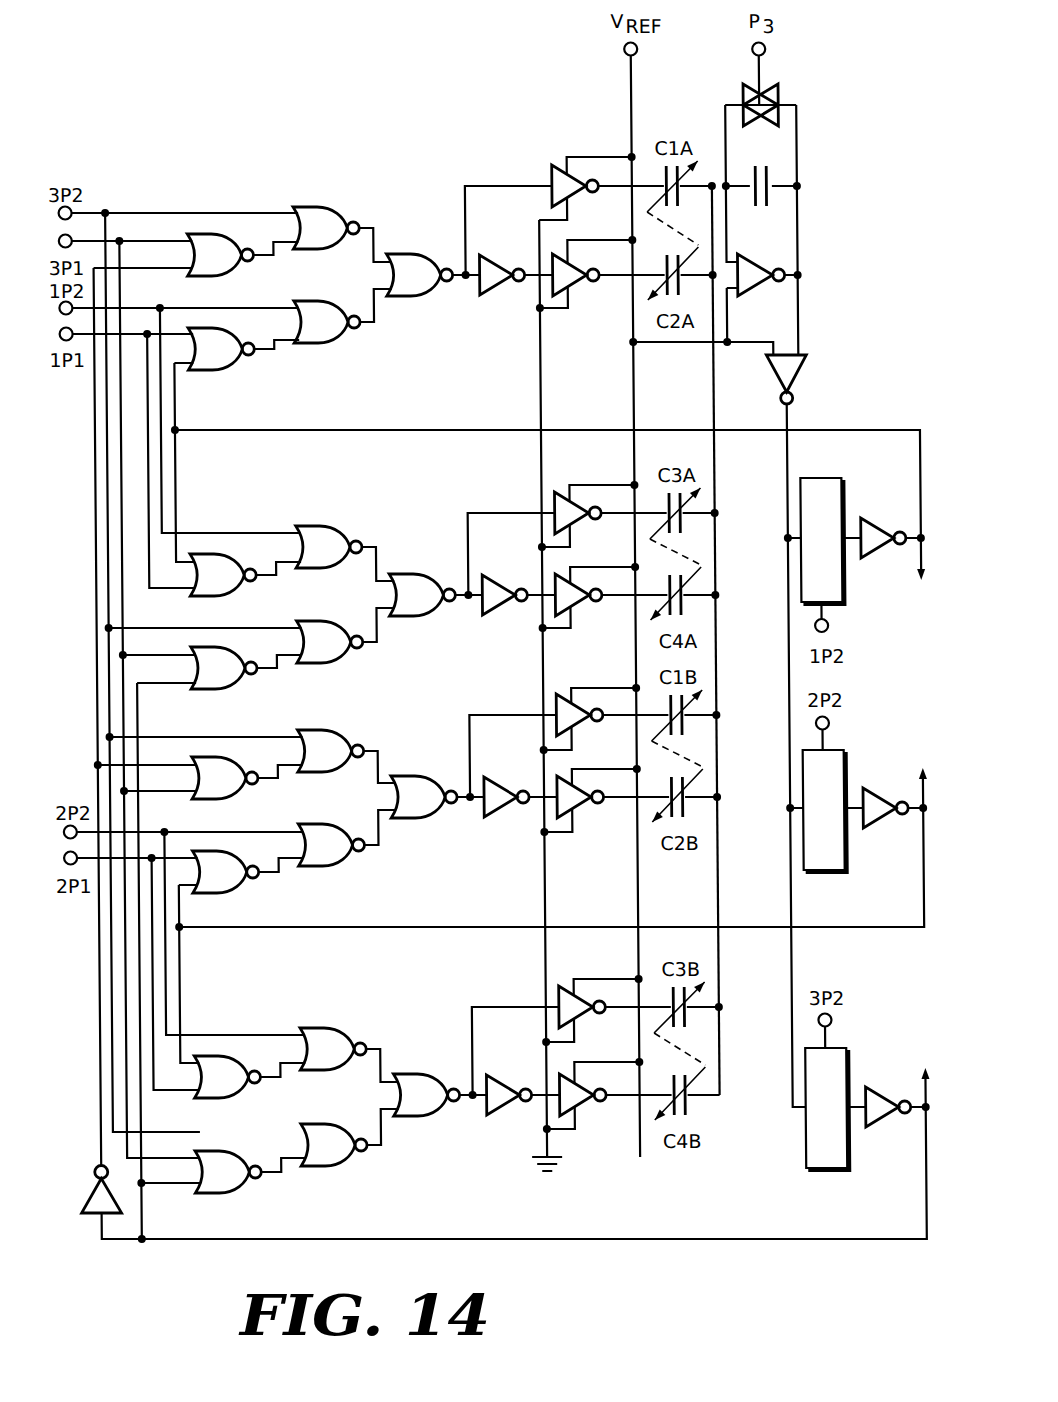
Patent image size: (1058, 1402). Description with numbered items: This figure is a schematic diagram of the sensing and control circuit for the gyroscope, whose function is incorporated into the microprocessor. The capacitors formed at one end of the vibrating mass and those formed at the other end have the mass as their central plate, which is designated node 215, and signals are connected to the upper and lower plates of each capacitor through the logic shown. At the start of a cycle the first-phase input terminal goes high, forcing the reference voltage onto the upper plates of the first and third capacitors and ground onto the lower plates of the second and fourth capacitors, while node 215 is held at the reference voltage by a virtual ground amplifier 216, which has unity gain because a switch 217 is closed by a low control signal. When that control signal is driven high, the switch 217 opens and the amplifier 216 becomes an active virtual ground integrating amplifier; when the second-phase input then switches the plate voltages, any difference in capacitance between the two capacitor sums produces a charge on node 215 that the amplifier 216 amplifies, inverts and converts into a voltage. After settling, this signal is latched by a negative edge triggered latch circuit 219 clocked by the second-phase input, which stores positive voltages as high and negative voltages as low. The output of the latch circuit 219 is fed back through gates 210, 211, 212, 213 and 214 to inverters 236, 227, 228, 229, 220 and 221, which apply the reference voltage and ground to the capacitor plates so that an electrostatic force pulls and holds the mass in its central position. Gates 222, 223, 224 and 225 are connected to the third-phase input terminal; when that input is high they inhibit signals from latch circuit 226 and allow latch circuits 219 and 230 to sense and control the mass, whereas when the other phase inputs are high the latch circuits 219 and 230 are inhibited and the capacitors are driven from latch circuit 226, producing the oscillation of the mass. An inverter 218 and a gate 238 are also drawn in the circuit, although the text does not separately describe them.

The gate 210 is at (219, 370).
The gate 211 is at (329, 343).
The gate 212 is at (408, 254).
The gate 213 is at (230, 596).
The gate 214 is at (317, 568).
The node 215 is at (714, 1060).
The virtual ground amplifier 216 is at (757, 265).
The switch 217 is at (781, 97).
The inverter 218 is at (799, 370).
The latch circuit 219 is at (841, 497).
The inverter 220 is at (575, 528).
The inverter 221 is at (576, 610).
The gate 222 is at (316, 249).
The gate 223 is at (329, 663).
The gate 224 is at (322, 772).
The gate 225 is at (322, 1166).
The latch circuit 226 is at (843, 1152).
The inverter 227 is at (574, 203).
The inverter 228 is at (574, 292).
The inverter 229 is at (498, 612).
The latch circuit 230 is at (843, 855).
The inverter 236 is at (498, 292).
The NOR gate 238 is at (405, 574).